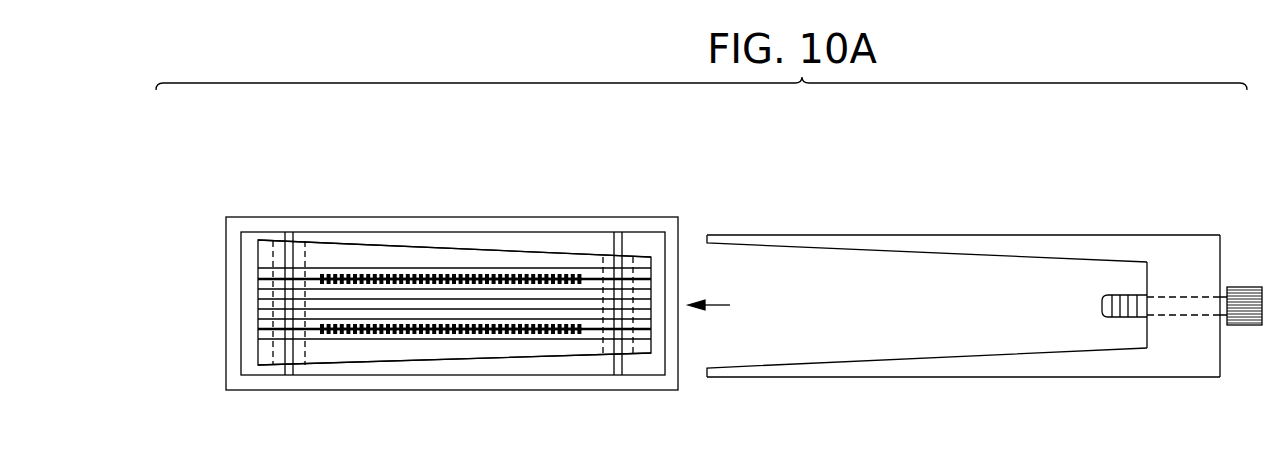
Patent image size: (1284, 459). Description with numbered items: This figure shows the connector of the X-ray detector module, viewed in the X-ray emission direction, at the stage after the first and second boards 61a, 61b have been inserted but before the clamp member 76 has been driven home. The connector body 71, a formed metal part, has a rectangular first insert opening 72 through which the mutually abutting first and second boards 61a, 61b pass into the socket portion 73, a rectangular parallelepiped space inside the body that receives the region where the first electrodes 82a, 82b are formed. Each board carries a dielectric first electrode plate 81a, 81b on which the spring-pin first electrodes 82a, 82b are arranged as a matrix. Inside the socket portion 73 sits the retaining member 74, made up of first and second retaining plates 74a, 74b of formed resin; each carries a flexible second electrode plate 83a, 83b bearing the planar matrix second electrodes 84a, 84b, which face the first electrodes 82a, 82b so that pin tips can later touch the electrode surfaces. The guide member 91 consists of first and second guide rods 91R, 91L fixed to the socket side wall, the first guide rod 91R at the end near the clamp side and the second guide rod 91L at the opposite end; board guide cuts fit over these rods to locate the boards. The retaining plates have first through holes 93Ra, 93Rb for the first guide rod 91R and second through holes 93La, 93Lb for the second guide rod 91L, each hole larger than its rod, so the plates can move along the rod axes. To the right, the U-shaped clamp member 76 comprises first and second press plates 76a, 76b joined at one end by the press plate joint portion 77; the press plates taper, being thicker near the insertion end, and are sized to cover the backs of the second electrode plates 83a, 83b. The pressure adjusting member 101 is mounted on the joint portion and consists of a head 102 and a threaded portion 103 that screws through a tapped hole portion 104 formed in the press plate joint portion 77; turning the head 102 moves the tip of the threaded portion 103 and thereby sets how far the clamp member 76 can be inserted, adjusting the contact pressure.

The connector body 71 is at (229, 219).
The first insert opening 72 is at (246, 232).
The socket portion 73 is at (601, 238).
The retaining member 74 is at (454, 228).
The first retaining plate 74a is at (351, 255).
The second retaining plate 74b is at (377, 352).
The clamp member 76 is at (989, 281).
The first press plate 76a is at (808, 236).
The second press plate 76b is at (902, 377).
The press plate joint portion 77 is at (1207, 360).
The first electrode plate 81a is at (258, 283).
The first electrode plate 81b is at (258, 324).
The first electrode 82a is at (497, 280).
The first electrode 82b is at (535, 328).
The second electrode plate 83a is at (258, 271).
The second electrode plate 83b is at (258, 336).
The second electrode 84a is at (425, 280).
The second electrode 84b is at (448, 328).
The first board 61a is at (258, 294).
The second board 61b is at (258, 314).
The guide member 91 is at (453, 345).
The second guide rod 91L is at (288, 371).
The first guide rod 91R is at (577, 327).
The second through hole 93La is at (301, 252).
The second through hole 93Lb is at (277, 354).
The first through hole 93Ra is at (628, 262).
The first through hole 93Rb is at (625, 355).
The pressure adjusting member 101 is at (1152, 289).
The head 102 is at (1247, 264).
The threaded portion 103 is at (1055, 245).
The tapped hole portion 104 is at (1193, 319).